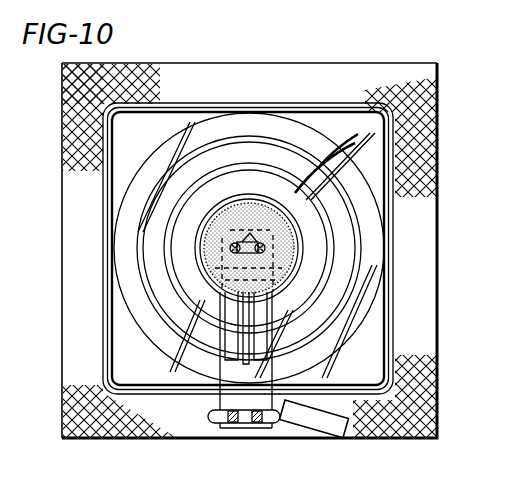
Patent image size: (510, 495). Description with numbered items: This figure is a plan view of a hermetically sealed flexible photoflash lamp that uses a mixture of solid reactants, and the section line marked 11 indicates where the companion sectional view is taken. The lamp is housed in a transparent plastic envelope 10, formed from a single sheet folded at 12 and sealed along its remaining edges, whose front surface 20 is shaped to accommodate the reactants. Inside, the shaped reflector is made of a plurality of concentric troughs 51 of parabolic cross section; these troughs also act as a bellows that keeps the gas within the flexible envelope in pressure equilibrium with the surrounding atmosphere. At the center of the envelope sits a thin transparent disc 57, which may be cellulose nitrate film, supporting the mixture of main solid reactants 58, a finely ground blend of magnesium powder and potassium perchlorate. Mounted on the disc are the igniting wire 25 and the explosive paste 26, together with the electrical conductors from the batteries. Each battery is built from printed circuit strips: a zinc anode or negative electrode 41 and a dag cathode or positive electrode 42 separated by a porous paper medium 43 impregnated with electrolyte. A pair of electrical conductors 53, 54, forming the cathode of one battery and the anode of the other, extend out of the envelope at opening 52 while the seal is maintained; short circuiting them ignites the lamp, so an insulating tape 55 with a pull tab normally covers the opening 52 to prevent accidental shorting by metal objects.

The hermetically sealed outer envelope 10 is at (372, 61).
The section line 11 is at (212, 33).
The fold of the container sheet 12 is at (313, 63).
The front surface of the container 20 is at (377, 323).
The igniting wire 25 is at (246, 236).
The explosive paste 26 is at (258, 257).
The anode element or negative electrode 41 is at (262, 340).
The cathode element or positive electrode 42 is at (222, 306).
The porous paper medium 43 is at (222, 334).
The concentric troughs 51 is at (320, 185).
The opening 52 is at (213, 416).
The electrical conductor 53 is at (233, 423).
The electrical conductor 54 is at (258, 430).
The insulating tape 55 is at (335, 436).
The thin transparent disc 57 is at (300, 250).
The solid reactants 58 is at (223, 223).